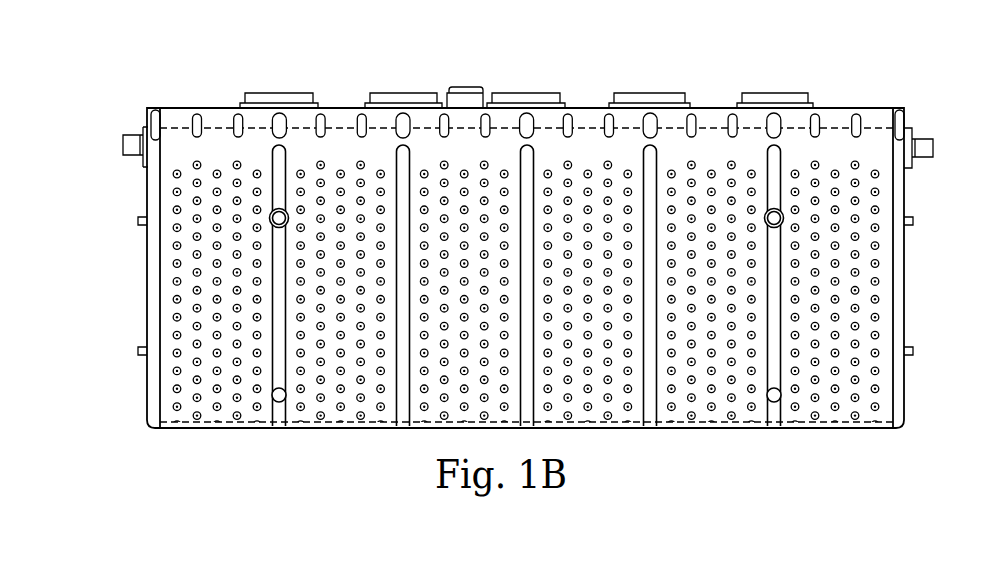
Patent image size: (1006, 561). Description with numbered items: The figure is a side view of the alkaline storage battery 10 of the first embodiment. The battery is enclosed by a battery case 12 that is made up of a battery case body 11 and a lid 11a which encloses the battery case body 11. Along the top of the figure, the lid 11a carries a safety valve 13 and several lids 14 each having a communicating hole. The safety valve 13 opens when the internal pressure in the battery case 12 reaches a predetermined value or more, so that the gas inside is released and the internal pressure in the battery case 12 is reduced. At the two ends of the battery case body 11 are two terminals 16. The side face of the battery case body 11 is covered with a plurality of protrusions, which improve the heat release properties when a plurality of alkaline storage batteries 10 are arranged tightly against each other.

The alkaline storage battery 10 is at (135, 99).
The battery case body 11 is at (878, 140).
The lid 11a is at (835, 120).
The battery case 12 is at (910, 72).
The safety valve 13 is at (463, 97).
The lid with a communicating hole 14 is at (272, 100).
The terminals 16 is at (132, 144).